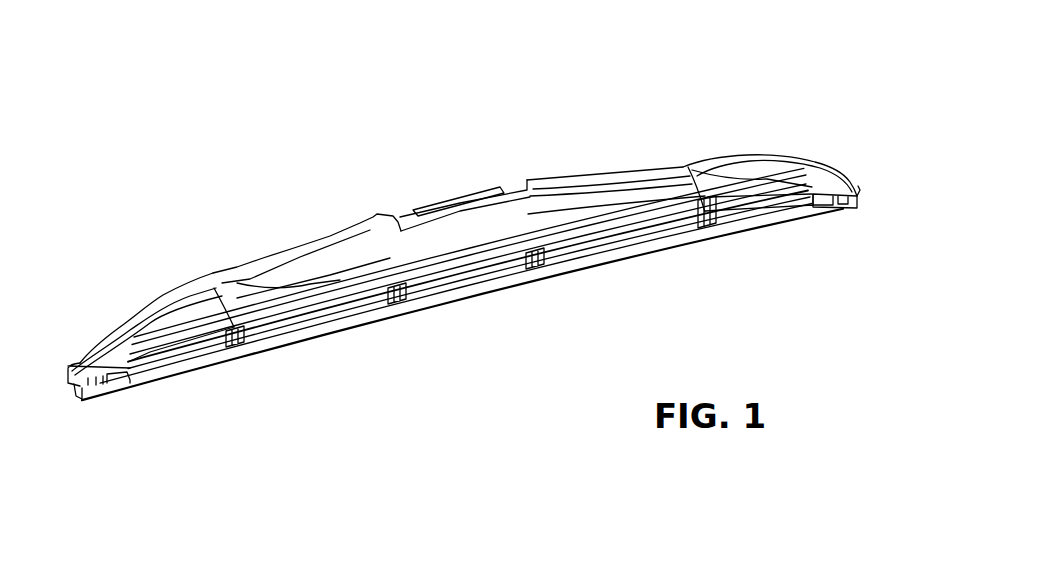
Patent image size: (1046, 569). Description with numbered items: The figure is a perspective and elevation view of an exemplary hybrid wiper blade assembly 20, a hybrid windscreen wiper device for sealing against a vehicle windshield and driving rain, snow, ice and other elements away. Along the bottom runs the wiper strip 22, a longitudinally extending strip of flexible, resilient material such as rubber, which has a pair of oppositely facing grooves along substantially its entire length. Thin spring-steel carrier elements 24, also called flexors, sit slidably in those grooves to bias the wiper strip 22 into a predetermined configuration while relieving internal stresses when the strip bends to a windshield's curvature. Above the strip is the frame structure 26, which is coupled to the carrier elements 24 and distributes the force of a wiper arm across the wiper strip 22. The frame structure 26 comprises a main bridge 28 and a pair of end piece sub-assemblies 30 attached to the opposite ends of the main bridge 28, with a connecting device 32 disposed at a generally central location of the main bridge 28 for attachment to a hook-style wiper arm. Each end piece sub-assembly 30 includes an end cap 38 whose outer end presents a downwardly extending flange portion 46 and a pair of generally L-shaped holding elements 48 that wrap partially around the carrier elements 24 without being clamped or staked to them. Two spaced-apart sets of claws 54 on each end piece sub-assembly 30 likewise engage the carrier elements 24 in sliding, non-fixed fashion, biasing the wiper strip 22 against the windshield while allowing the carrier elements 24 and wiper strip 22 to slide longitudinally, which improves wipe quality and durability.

The hybrid wiper blade assembly 20 is at (686, 94).
The wiper strip 22 is at (665, 243).
The carrier elements 24 is at (332, 317).
The frame structure 26 is at (301, 230).
The main bridge 28 is at (570, 178).
The end piece sub-assemblies 30 is at (104, 331).
The connecting device 32 is at (452, 198).
The end cap 38 is at (207, 307).
The downwardly extending flange portion 46 is at (80, 398).
The L-shaped holding elements 48 is at (117, 379).
The claws 54 is at (240, 351).